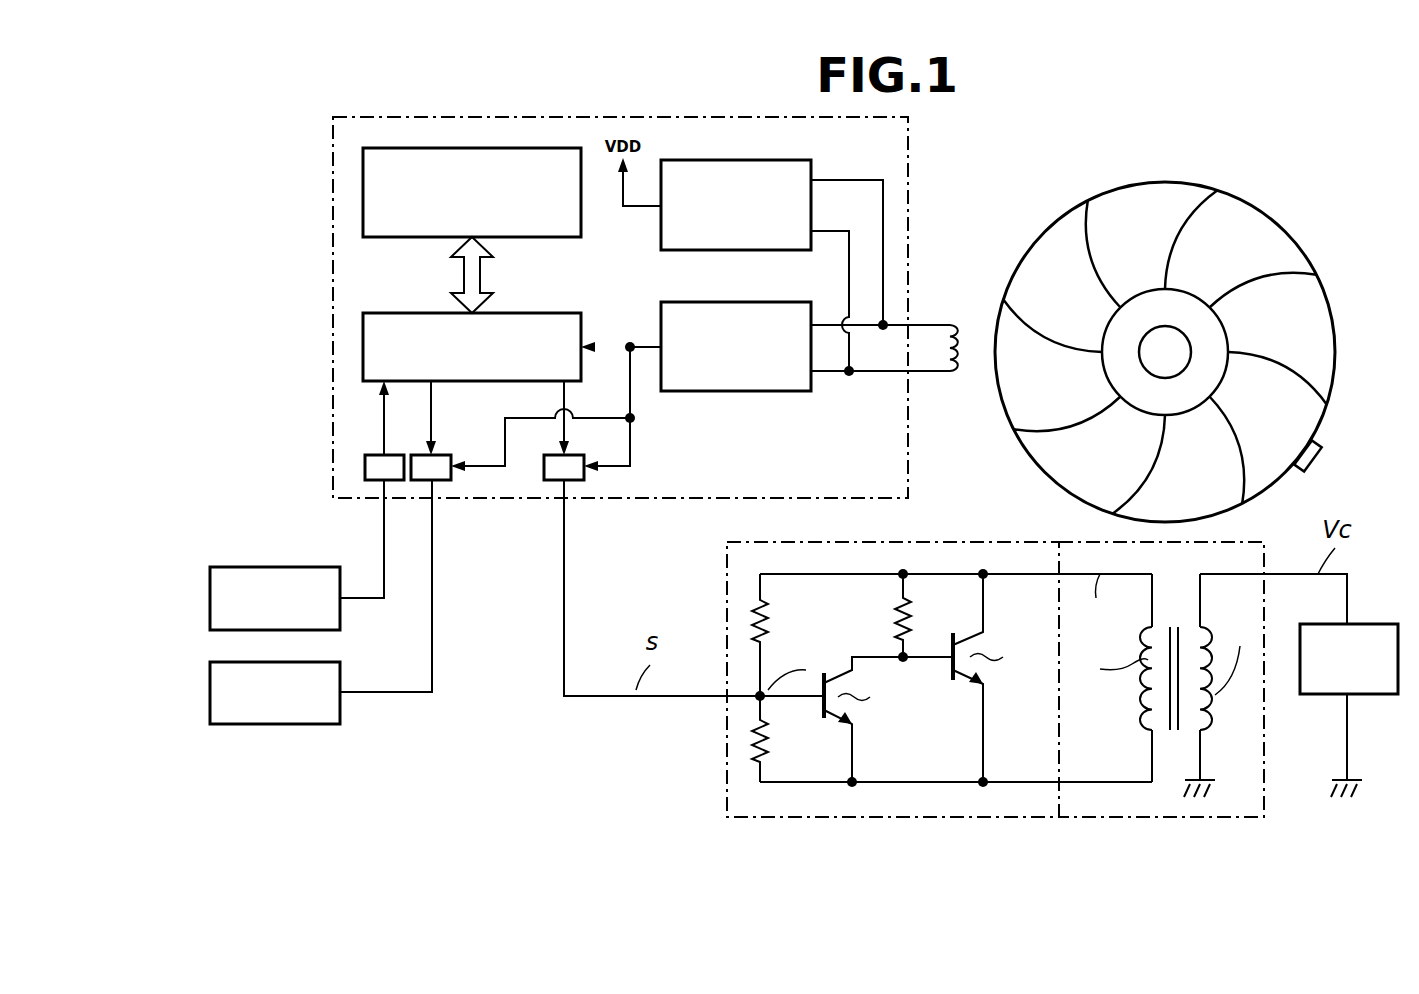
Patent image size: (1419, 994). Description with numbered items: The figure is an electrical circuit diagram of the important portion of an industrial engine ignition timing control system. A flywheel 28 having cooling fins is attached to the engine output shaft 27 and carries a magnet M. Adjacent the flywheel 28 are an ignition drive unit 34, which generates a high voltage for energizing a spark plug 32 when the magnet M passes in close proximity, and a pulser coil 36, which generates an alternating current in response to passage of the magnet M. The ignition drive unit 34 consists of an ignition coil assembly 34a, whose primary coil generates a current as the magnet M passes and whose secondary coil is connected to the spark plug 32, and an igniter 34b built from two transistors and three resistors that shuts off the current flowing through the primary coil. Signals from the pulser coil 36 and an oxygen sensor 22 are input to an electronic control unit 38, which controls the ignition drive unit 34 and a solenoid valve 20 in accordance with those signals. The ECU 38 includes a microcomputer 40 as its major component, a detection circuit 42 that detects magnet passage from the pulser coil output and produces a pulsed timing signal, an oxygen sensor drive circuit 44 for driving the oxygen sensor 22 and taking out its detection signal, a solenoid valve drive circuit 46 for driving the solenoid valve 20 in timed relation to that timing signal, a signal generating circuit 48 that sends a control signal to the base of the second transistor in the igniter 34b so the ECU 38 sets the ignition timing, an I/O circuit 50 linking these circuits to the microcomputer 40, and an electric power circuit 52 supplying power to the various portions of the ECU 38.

The solenoid valve 20 is at (335, 662).
The oxygen sensor 22 is at (285, 567).
The output shaft 27 is at (1178, 352).
The flywheel 28 is at (1250, 223).
The spark plug 32 is at (1375, 624).
The ignition drive unit 34 is at (1037, 727).
The ignition coil assembly 34a is at (1203, 706).
The igniter 34b is at (1041, 818).
The pulser coil 36 is at (950, 325).
The electronic control unit (ECU) 38 is at (909, 167).
The microcomputer 40 is at (531, 148).
The detection circuit 42 is at (780, 302).
The oxygen sensor drive circuit 44 is at (372, 455).
The solenoid valve drive circuit 46 is at (442, 455).
The signal generating circuit 48 is at (575, 455).
The I/O circuit 50 is at (545, 313).
The electric power circuit 52 is at (764, 160).
The magnet M is at (1325, 455).